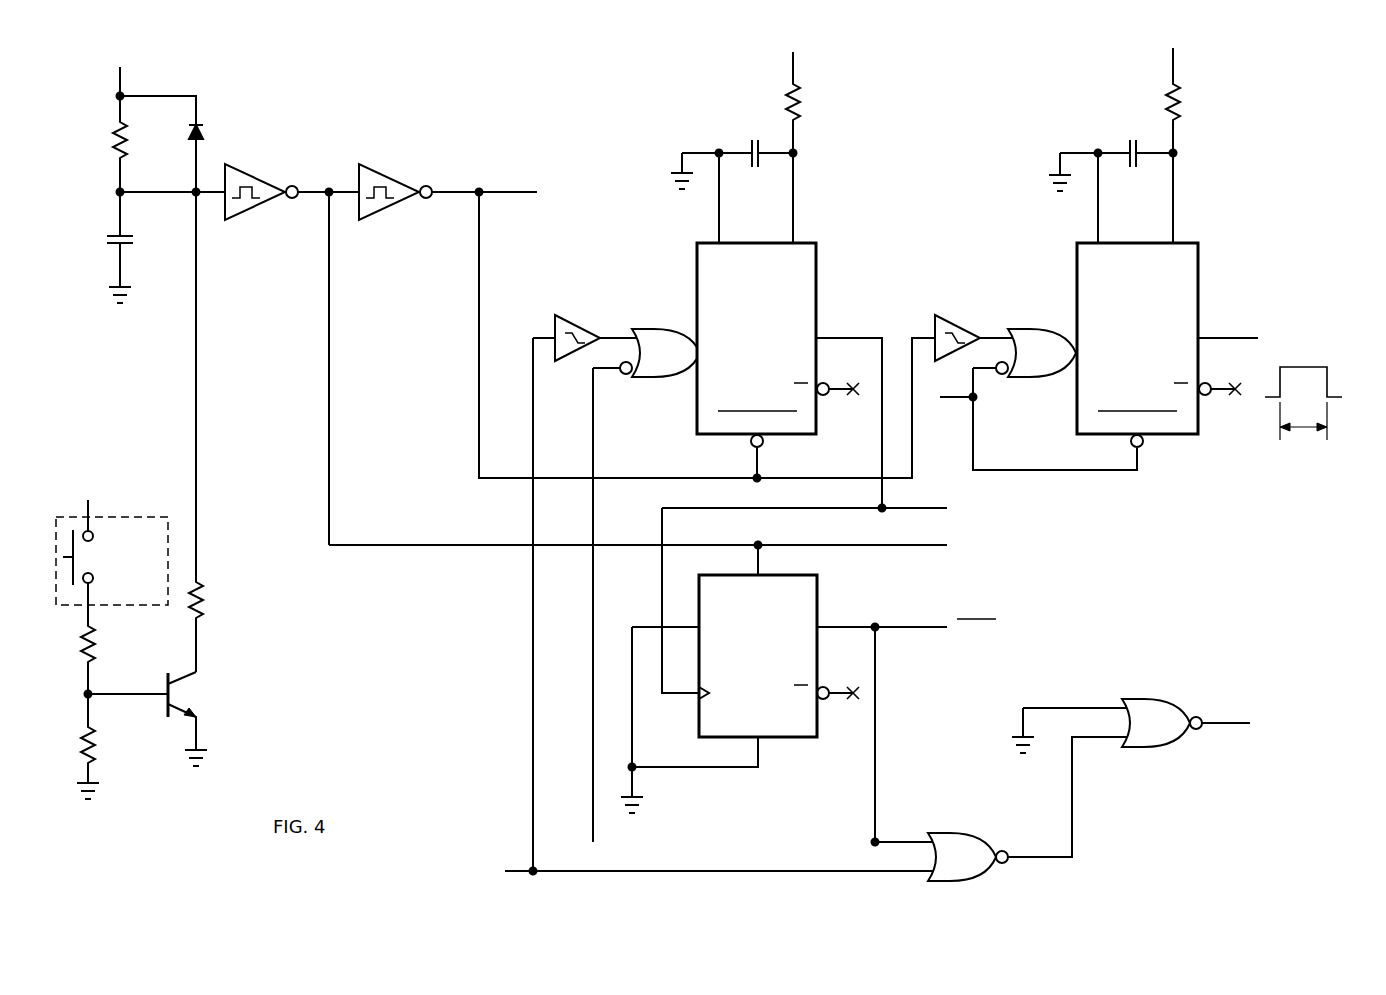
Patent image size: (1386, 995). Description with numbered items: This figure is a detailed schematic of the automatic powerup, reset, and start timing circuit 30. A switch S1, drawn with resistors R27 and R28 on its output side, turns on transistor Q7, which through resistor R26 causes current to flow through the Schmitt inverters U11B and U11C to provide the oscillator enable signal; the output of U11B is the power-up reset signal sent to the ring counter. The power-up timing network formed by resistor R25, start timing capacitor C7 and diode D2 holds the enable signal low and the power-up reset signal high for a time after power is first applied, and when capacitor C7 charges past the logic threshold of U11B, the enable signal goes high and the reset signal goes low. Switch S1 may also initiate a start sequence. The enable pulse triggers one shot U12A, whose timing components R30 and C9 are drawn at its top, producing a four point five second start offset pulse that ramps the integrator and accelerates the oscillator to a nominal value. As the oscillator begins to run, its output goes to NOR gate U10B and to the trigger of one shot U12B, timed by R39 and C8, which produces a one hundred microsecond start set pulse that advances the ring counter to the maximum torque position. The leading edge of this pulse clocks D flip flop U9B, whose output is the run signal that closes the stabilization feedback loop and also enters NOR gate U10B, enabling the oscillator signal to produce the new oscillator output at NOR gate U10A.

The automatic powerup, reset, and start timing circuit 30 is at (696, 469).
The power-up timing resistor R25 is at (92, 141).
The power-up timing diode D2 is at (215, 134).
The start timing capacitor C7 is at (133, 247).
The Schmitt inverter U11B is at (260, 195).
The Schmitt inverter U11C is at (394, 195).
The timing resistor R39 is at (811, 75).
The timing capacitor C8 is at (752, 173).
The timing resistor R30 is at (1195, 75).
The timing capacitor C9 is at (1129, 185).
The one shot U12B is at (718, 347).
The one shot U12A is at (1076, 347).
The D flip flop U9B is at (767, 659).
The NOR gate U10B is at (974, 860).
The NOR gate U10A is at (1159, 725).
The switch S1 is at (112, 542).
The resistor R27 is at (67, 643).
The resistor R28 is at (108, 743).
The resistor R26 is at (217, 598).
The transistor Q7 is at (209, 699).